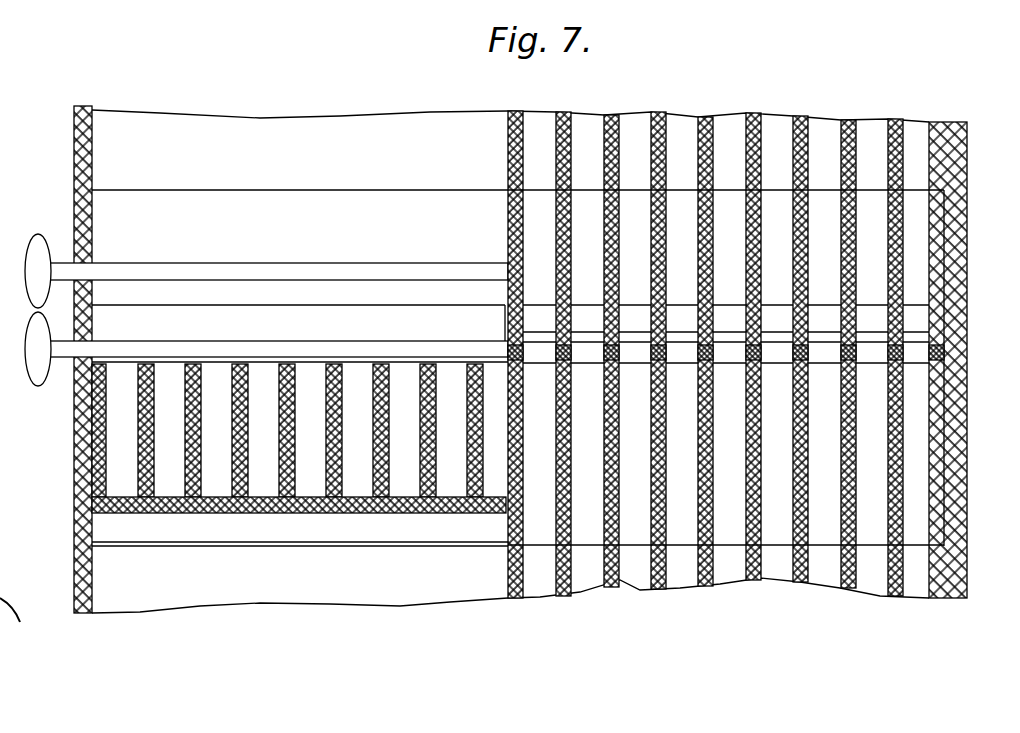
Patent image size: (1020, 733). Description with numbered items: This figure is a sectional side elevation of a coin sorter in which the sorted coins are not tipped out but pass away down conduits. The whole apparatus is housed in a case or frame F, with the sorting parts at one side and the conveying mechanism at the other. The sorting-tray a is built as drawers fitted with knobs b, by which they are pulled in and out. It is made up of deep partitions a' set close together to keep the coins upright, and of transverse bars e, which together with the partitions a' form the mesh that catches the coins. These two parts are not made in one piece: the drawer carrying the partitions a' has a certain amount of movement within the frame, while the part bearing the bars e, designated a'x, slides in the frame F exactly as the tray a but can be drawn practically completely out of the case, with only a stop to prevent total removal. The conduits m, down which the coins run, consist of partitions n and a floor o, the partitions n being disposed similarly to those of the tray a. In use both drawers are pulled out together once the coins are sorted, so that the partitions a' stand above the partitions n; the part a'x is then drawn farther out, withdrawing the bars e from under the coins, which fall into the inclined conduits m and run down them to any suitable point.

The sorting-tray a is at (549, 354).
The partitions a' is at (741, 356).
The bar-carrying tray part a'x is at (736, 337).
The knobs b is at (337, 266).
The transverse bars e is at (549, 309).
The conduit partitions n is at (185, 428).
The floor o is at (143, 513).
The conduits m is at (167, 479).
The case or frame F is at (518, 359).